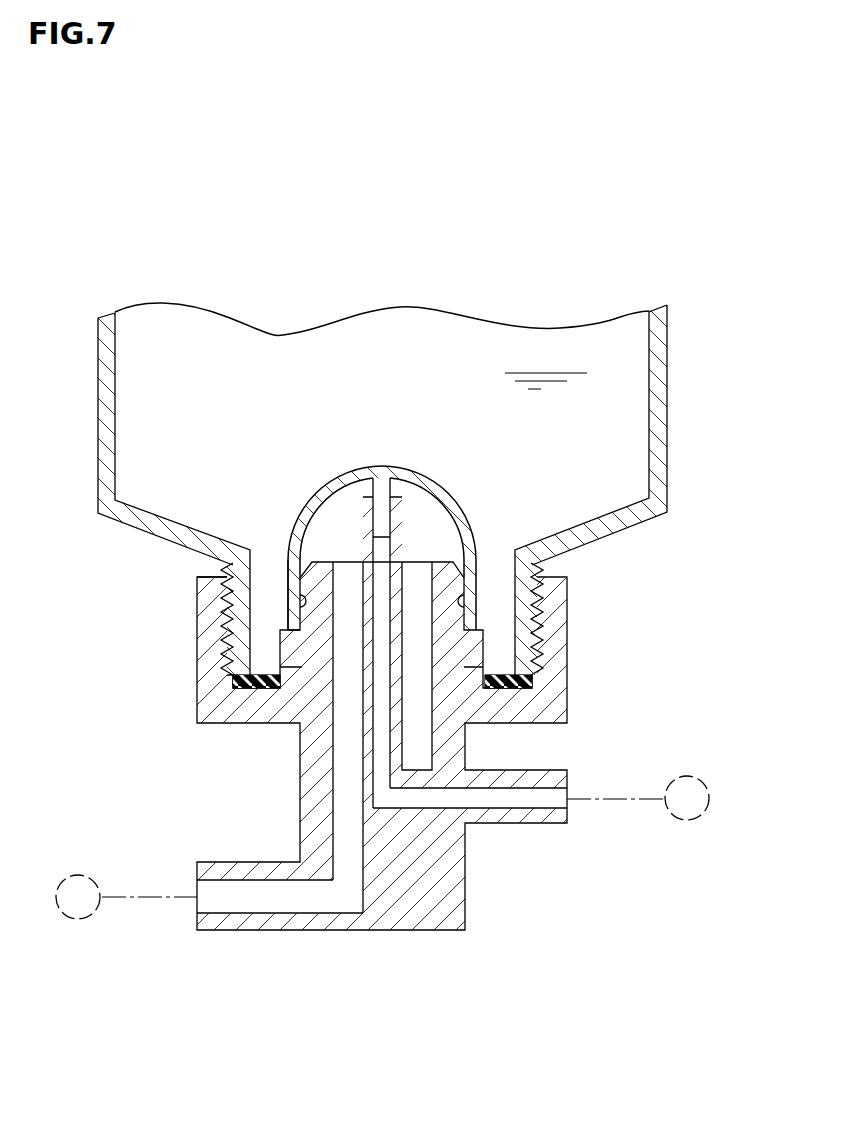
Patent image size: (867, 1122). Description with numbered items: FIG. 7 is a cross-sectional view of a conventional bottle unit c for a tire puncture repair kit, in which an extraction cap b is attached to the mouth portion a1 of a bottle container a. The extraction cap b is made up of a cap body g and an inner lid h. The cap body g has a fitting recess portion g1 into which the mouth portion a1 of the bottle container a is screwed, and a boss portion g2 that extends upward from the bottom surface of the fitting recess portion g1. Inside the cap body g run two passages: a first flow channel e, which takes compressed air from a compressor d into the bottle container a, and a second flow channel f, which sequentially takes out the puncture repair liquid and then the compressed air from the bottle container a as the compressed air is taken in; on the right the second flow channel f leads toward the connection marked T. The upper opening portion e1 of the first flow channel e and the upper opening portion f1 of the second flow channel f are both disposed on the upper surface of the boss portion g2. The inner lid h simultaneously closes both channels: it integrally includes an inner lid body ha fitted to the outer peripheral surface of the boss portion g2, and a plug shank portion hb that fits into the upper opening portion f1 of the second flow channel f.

The bottle container a is at (668, 350).
The mouth portion a1 is at (253, 608).
The bottle unit c is at (678, 421).
The cap body g is at (575, 642).
The fitting recess portion g1 is at (245, 670).
The boss portion g2 is at (297, 590).
The upper opening portion e1 is at (350, 560).
The first flow channel e is at (228, 915).
The upper opening portion f1 is at (380, 495).
The second flow channel f is at (507, 810).
The plug shank portion hb is at (386, 522).
The inner lid h is at (454, 492).
The inner lid body ha is at (290, 592).
The extraction cap b is at (685, 557).
The compressor d is at (67, 918).
The tank connection T is at (697, 819).